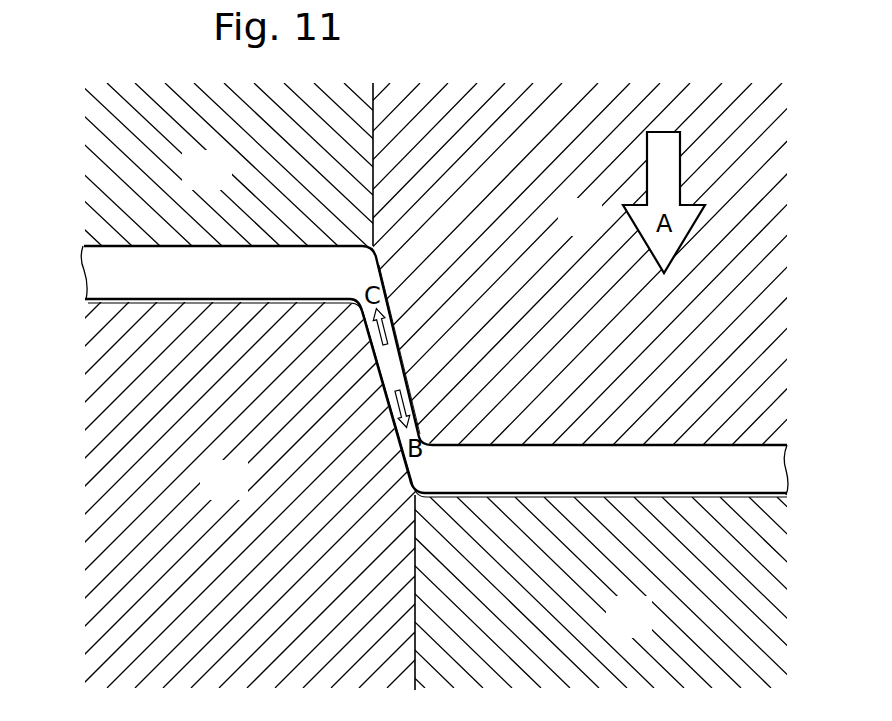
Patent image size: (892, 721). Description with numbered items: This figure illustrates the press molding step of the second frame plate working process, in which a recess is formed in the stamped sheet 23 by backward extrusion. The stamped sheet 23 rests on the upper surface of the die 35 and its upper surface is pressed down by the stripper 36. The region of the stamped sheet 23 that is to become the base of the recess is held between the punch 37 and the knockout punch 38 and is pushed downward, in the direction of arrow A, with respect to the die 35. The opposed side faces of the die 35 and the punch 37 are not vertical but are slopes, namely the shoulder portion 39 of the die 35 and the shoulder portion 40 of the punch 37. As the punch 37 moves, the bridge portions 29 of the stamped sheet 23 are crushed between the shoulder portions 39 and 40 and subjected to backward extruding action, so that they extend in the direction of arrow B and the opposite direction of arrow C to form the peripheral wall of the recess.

The stamped sheet 23 is at (133, 272).
The bridge portions 29 is at (398, 347).
The die 35 is at (238, 492).
The stripper 36 is at (222, 182).
The punch 37 is at (594, 230).
The knockout punch 38 is at (644, 631).
The shoulder portion 39 is at (381, 373).
The shoulder portion 40 is at (397, 367).